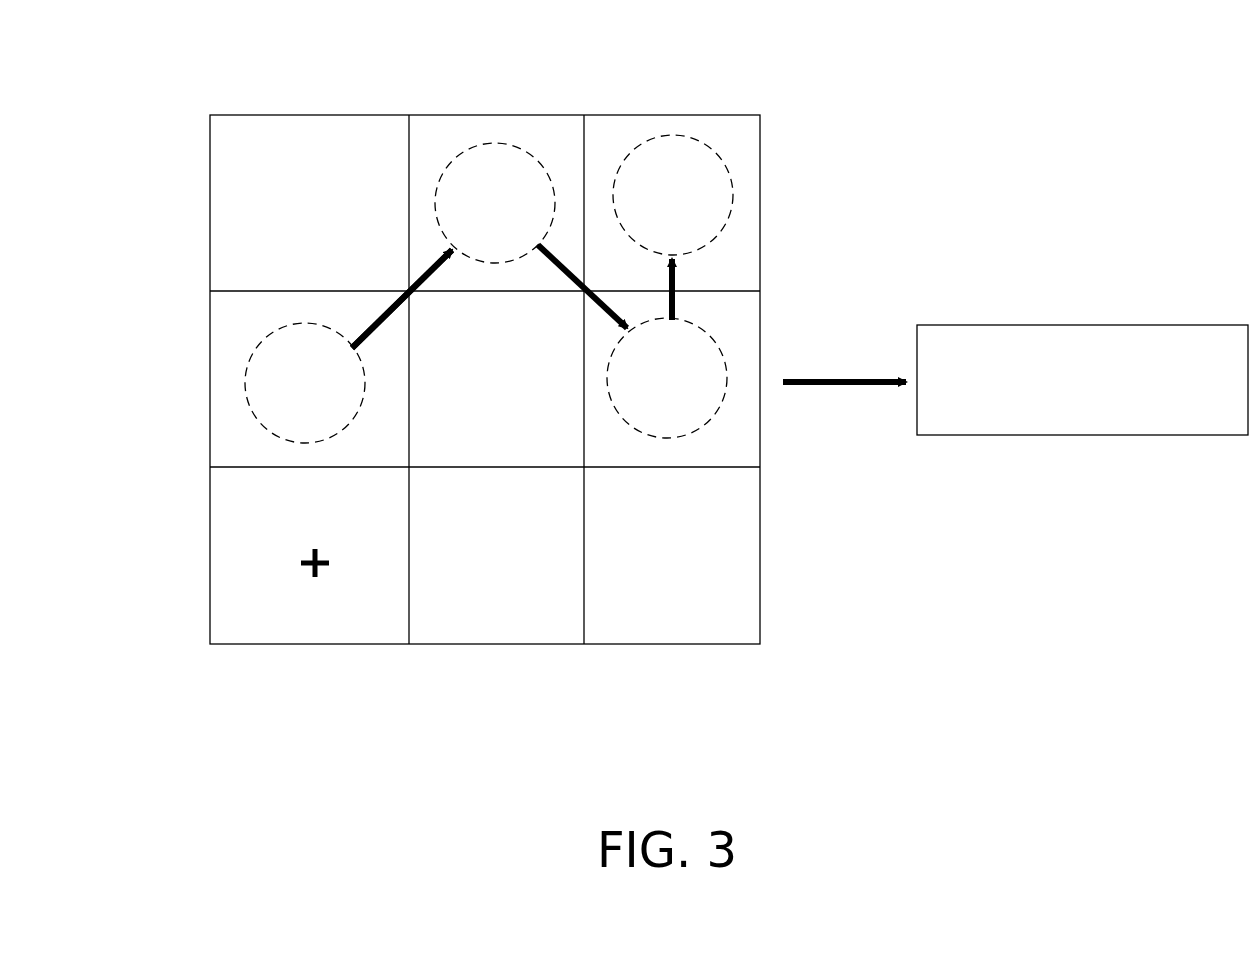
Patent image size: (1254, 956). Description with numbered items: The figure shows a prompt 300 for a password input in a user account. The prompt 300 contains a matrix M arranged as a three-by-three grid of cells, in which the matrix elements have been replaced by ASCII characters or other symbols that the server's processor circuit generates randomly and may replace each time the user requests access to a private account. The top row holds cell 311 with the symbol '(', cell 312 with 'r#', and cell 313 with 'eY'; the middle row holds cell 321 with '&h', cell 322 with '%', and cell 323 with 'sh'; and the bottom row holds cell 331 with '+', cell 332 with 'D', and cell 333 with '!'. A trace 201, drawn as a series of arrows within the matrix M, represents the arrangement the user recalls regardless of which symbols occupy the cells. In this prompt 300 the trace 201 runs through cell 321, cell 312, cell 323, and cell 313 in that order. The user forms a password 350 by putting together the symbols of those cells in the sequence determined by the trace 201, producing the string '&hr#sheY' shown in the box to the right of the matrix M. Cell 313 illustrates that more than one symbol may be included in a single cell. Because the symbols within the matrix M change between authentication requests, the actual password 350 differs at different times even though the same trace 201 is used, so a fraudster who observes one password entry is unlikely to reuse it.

The prompt 300 is at (272, 42).
The matrix M is at (632, 115).
The cell 311 is at (295, 195).
The cell 312 is at (533, 192).
The cell 313 is at (712, 192).
The trace 201 is at (392, 305).
The cell 321 is at (263, 403).
The cell 322 is at (517, 387).
The cell 323 is at (667, 405).
The cell 331 is at (295, 572).
The cell 332 is at (522, 570).
The cell 333 is at (683, 560).
The password 350 is at (1090, 325).